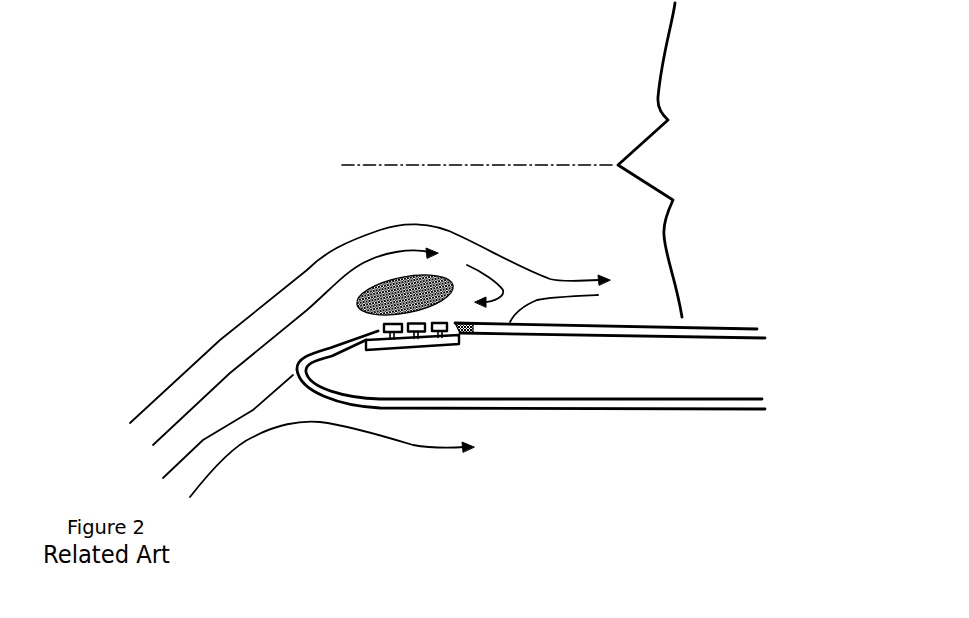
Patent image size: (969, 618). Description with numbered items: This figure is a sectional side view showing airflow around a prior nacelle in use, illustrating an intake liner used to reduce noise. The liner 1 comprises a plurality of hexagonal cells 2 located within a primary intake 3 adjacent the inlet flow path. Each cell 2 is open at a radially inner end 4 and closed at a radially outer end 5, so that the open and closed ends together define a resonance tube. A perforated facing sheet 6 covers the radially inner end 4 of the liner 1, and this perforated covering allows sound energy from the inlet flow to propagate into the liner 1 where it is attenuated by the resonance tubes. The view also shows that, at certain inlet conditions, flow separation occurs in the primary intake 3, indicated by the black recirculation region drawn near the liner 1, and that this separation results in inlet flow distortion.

The liner 1 is at (321, 320).
The hexagonal cells 2 is at (456, 333).
The primary intake 3 is at (377, 130).
The radially inner end 4 is at (552, 293).
The radially outer end 5 is at (380, 346).
The perforated facing sheet 6 is at (375, 330).